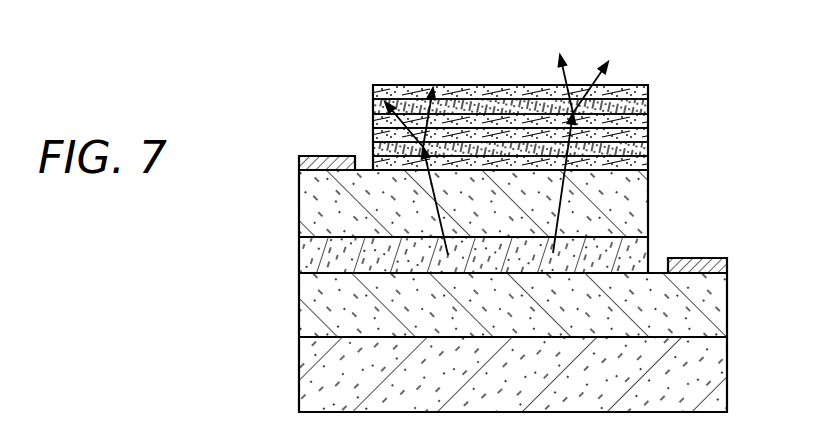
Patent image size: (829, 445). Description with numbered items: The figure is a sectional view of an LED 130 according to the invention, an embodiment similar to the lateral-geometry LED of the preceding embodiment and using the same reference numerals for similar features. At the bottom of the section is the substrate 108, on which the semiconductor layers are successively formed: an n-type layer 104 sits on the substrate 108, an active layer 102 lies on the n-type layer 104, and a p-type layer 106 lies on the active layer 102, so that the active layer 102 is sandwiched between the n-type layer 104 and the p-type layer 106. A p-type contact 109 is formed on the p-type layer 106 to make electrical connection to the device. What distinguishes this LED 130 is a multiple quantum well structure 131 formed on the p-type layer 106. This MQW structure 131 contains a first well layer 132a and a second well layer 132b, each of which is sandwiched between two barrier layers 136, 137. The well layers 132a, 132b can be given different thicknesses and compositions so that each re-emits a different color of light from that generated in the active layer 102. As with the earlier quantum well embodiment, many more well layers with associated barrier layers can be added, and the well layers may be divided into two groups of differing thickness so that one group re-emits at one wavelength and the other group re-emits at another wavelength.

The LED 130 is at (236, 94).
The MQW structure 131 is at (630, 74).
The first well layer 132a is at (650, 150).
The second well layer 132b is at (650, 107).
The barrier layer 136 is at (372, 94).
The barrier layer 137 is at (372, 122).
The p-type contact 109 is at (299, 163).
The p-type layer 106 is at (299, 206).
The active layer 102 is at (299, 258).
The n-type layer 104 is at (299, 305).
The substrate 108 is at (299, 376).